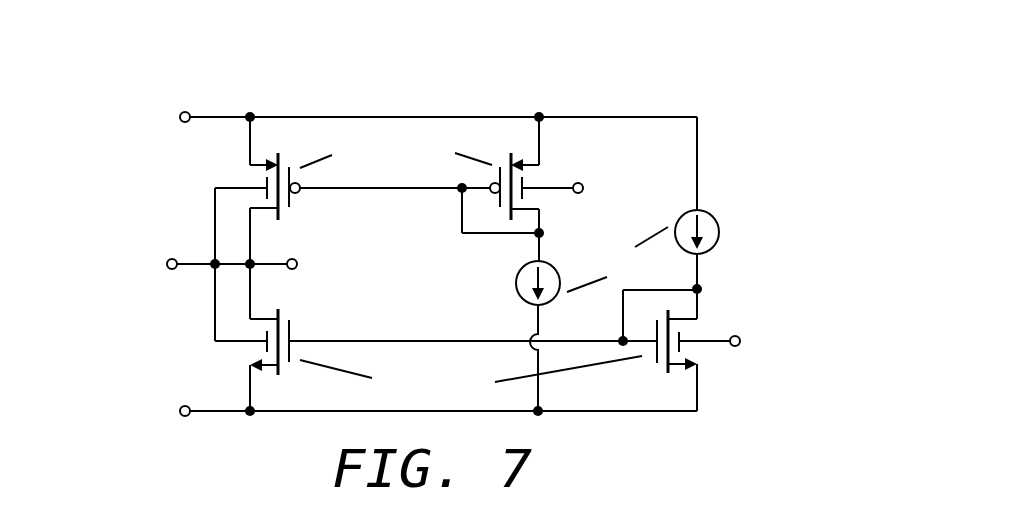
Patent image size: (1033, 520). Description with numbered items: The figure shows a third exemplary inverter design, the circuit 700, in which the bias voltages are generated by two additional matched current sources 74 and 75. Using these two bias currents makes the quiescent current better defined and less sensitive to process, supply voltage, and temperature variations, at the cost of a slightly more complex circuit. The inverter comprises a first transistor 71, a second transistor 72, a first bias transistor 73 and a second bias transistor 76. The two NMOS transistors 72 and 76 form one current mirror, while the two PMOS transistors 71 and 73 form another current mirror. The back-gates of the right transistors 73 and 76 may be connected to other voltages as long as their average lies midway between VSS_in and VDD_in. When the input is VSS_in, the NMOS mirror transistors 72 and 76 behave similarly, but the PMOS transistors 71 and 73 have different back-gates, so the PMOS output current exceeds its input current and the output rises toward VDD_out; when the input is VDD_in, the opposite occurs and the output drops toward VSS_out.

The circuit 700 is at (121, 48).
The first transistor 71 is at (305, 207).
The second transistor 72 is at (305, 322).
The first bias transistor 73 is at (550, 170).
The current source 74 is at (510, 270).
The current source 75 is at (723, 218).
The second bias transistor 76 is at (710, 325).